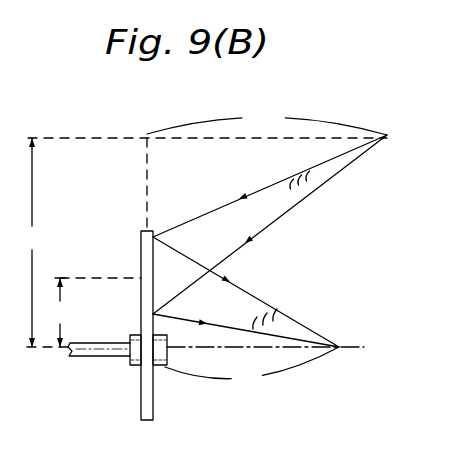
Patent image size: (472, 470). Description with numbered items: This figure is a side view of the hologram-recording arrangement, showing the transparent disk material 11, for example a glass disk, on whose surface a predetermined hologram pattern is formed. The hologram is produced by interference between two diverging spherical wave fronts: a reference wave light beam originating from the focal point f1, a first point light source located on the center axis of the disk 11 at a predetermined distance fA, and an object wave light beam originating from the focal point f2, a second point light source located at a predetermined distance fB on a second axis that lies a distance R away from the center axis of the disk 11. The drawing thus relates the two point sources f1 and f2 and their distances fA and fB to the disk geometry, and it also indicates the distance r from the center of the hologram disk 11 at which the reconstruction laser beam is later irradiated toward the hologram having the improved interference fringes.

The transparent disk material 11 is at (154, 418).
The distance R is at (31, 242).
The distance r is at (60, 312).
The focal point f1 is at (258, 307).
The focal point f2 is at (282, 217).
The distance fA is at (252, 371).
The distance fB is at (267, 119).